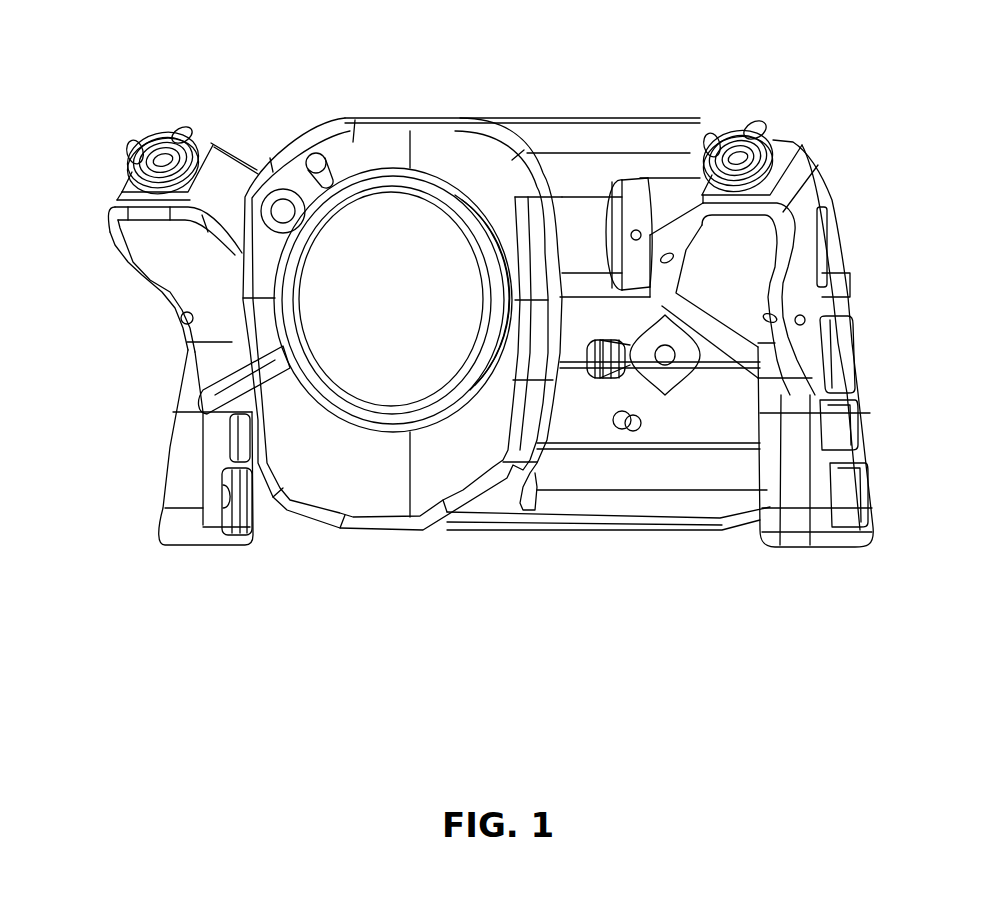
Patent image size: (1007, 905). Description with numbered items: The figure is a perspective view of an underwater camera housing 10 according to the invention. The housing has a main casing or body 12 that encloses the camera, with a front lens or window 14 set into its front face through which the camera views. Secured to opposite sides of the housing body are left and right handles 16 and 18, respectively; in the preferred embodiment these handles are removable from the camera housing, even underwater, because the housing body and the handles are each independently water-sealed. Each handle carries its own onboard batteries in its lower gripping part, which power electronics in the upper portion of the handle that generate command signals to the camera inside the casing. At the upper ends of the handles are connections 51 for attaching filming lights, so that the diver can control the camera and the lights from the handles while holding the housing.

The underwater camera housing 10 is at (567, 130).
The main casing or body 12 is at (662, 475).
The front lens or window 14 is at (384, 210).
The left handle 16 is at (810, 182).
The right handle 18 is at (133, 233).
The connections for lights 51 is at (182, 135).